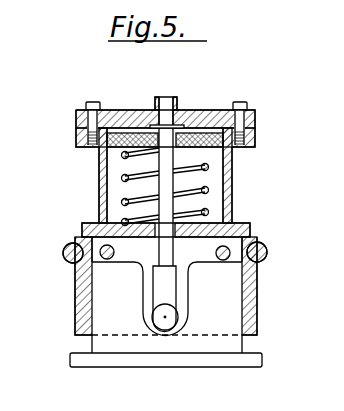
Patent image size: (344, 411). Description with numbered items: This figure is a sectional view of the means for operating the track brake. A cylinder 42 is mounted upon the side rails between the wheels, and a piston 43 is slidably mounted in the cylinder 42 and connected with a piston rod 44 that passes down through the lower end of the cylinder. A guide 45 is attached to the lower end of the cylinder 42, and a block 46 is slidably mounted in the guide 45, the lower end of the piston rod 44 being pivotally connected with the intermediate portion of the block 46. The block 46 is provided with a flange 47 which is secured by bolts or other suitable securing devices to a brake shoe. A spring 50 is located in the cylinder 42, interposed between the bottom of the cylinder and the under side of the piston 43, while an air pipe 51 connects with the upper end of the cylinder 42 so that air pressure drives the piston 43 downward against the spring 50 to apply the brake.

The cylinder 42 is at (233, 186).
The piston 43 is at (102, 147).
The piston rod 44 is at (160, 193).
The guide 45 is at (254, 298).
The block 46 is at (103, 292).
The flange 47 is at (72, 357).
The spring 50 is at (209, 166).
The air pipe 51 is at (177, 103).